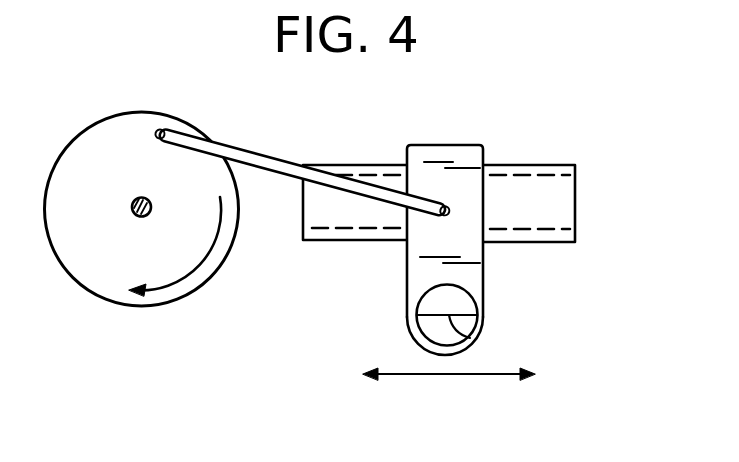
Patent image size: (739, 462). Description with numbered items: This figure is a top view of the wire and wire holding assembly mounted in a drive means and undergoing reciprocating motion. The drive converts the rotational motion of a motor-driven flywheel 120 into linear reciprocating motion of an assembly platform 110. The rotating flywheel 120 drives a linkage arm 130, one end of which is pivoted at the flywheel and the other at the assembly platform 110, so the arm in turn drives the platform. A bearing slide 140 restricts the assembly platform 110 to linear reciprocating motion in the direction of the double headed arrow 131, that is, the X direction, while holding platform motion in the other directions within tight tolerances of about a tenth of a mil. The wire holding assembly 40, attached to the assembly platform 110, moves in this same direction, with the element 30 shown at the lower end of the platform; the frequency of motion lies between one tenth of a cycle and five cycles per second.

The roller pin 30 is at (467, 340).
The wire holding assembly 40 is at (418, 302).
The assembly platform 110 is at (442, 152).
The flywheel 120 is at (101, 286).
The linkage arm 130 is at (276, 166).
The double headed arrow 131 is at (417, 375).
The bearing slide 140 is at (586, 194).